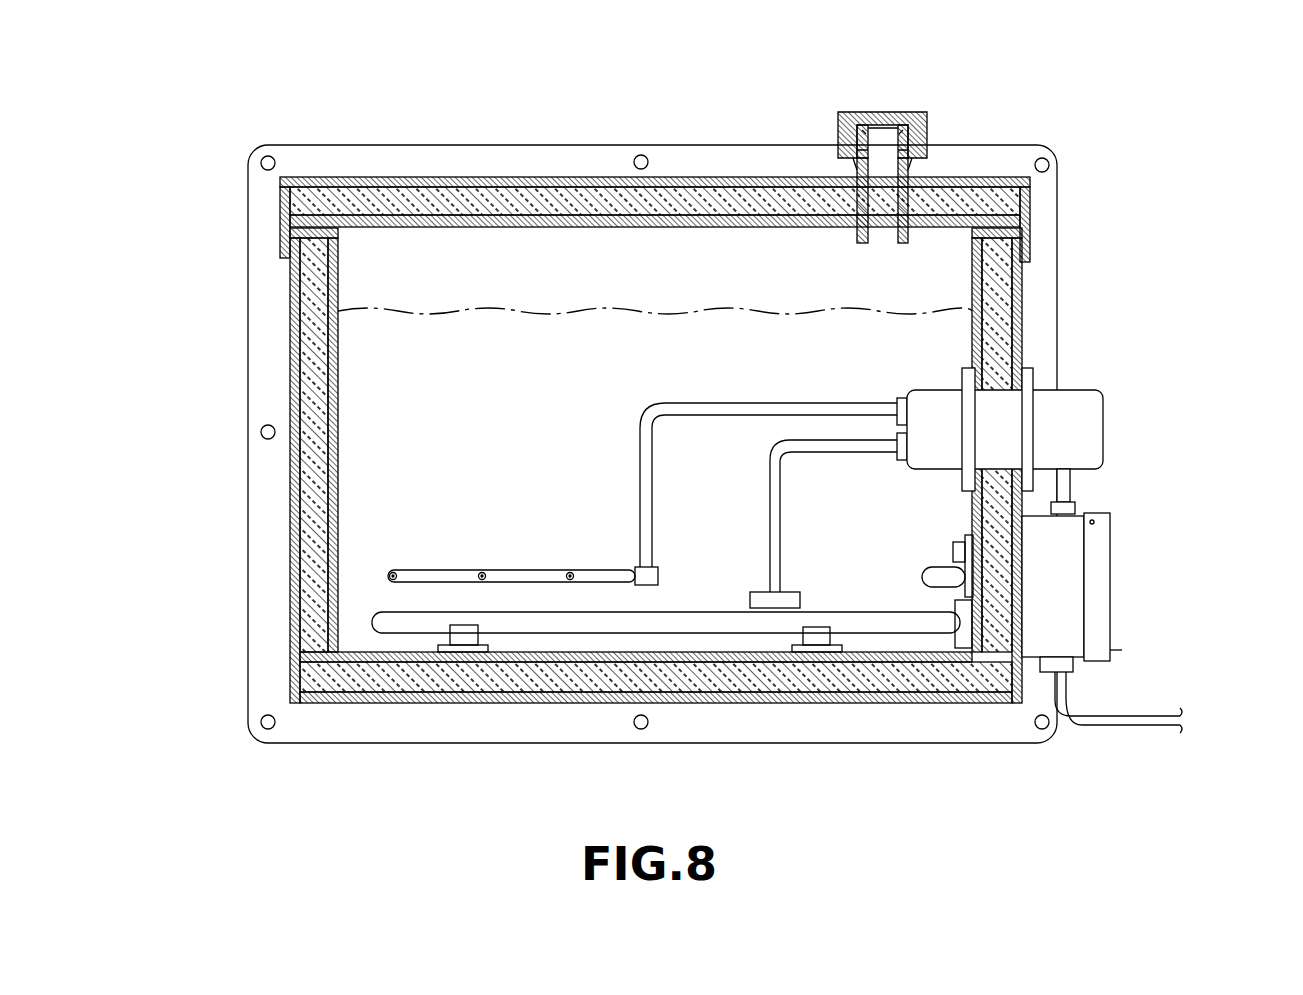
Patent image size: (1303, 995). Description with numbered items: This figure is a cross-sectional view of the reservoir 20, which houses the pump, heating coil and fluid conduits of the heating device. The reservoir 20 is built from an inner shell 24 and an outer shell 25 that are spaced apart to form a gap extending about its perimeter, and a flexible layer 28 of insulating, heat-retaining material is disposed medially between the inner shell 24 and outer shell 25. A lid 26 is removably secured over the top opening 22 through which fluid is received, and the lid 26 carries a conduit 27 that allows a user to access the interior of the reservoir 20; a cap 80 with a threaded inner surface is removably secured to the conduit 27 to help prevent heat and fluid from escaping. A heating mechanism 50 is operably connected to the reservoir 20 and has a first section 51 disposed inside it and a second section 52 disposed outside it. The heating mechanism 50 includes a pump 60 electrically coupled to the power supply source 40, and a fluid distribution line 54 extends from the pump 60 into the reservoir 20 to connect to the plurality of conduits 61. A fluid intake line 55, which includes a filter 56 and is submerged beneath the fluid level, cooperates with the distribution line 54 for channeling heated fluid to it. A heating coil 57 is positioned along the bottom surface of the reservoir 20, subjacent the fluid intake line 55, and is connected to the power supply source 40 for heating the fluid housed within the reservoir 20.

The reservoir 20 is at (238, 115).
The top opening 22 is at (897, 112).
The inner shell 24 is at (402, 215).
The outer shell 25 is at (515, 177).
The lid 26 is at (853, 112).
The conduit 27 is at (878, 158).
The flexible layer 28 is at (450, 195).
The power supply source 40 is at (1059, 575).
The heating mechanism 50 is at (1100, 512).
The first section 51 is at (672, 455).
The second section 52 is at (1103, 432).
The fluid distribution line 54 is at (688, 403).
The fluid intake line 55 is at (836, 452).
The filter 56 is at (778, 608).
The heating coil 57 is at (718, 643).
The pump 60 is at (1086, 390).
The conduits 61 is at (570, 574).
The cap 80 is at (870, 118).